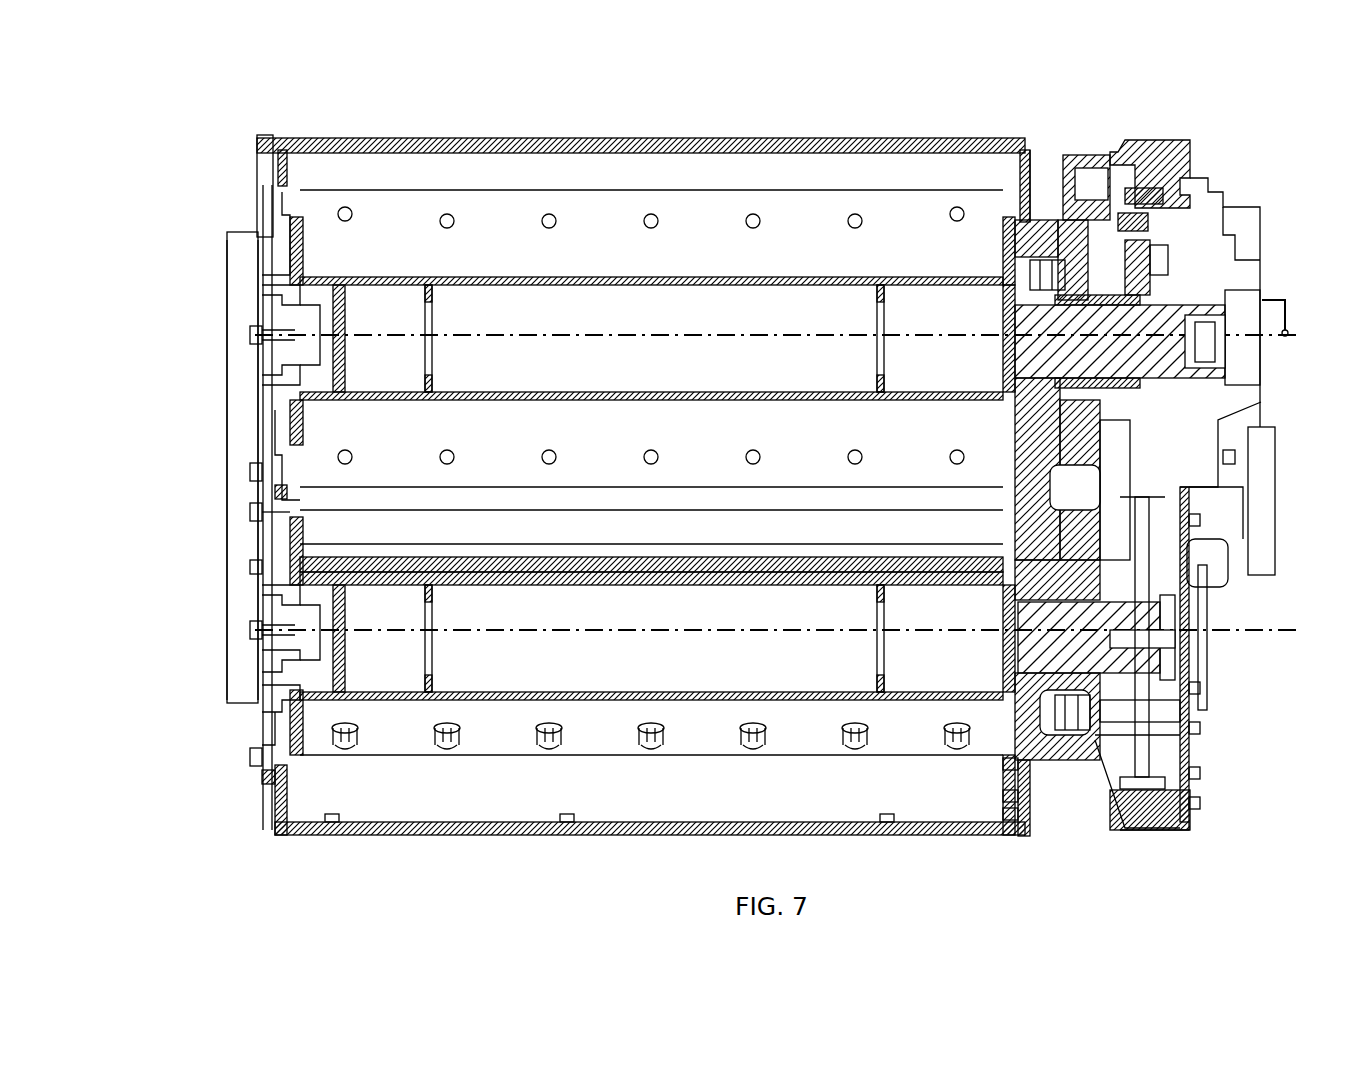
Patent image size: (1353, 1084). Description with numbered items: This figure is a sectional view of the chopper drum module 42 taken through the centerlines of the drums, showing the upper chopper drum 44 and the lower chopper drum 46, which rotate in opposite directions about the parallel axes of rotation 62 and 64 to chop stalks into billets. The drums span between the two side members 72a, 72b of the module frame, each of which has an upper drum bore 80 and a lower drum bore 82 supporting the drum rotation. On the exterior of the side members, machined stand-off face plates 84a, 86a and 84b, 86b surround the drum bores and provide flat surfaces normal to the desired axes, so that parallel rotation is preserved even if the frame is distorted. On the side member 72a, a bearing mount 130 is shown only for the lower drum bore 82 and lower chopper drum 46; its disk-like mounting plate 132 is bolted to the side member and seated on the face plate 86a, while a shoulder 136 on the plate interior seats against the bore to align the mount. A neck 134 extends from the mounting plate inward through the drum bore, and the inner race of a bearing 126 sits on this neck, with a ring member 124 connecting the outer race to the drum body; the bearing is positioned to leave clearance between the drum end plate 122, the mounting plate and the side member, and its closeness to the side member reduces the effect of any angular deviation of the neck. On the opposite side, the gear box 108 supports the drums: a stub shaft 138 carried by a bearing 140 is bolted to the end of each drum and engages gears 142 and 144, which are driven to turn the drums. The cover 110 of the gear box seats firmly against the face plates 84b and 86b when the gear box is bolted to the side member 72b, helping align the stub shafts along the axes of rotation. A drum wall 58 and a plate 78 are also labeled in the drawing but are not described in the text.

The chopper drum module 42 is at (172, 227).
The upper chopper drum 44 is at (507, 318).
The lower chopper drum 46 is at (522, 656).
The chamber wall 58 is at (705, 235).
The axis of rotation 62 is at (1264, 300).
The axis of rotation 64 is at (1246, 650).
The side member 72a is at (262, 812).
The side member 72b is at (1007, 836).
The mounting plate 78 is at (238, 238).
The upper drum bore 80 is at (252, 296).
The lower drum bore 82 is at (233, 663).
The face plate 84a is at (268, 188).
The face plate 84b is at (1025, 210).
The face plate 86a is at (268, 484).
The face plate 86b is at (1040, 795).
The gear box 108 is at (1192, 826).
The cover 110 is at (1192, 762).
The end plate 122 is at (278, 410).
The ring member 124 is at (282, 378).
The bearing 126 is at (288, 302).
The bearing mount 130 is at (253, 573).
The mounting plate 132 is at (262, 512).
The neck 134 is at (290, 648).
The shoulder 136 is at (290, 722).
The stub shaft 138 is at (1040, 215).
The bearing 140 is at (1058, 200).
The gear 142 is at (1135, 255).
The gear 144 is at (1137, 725).